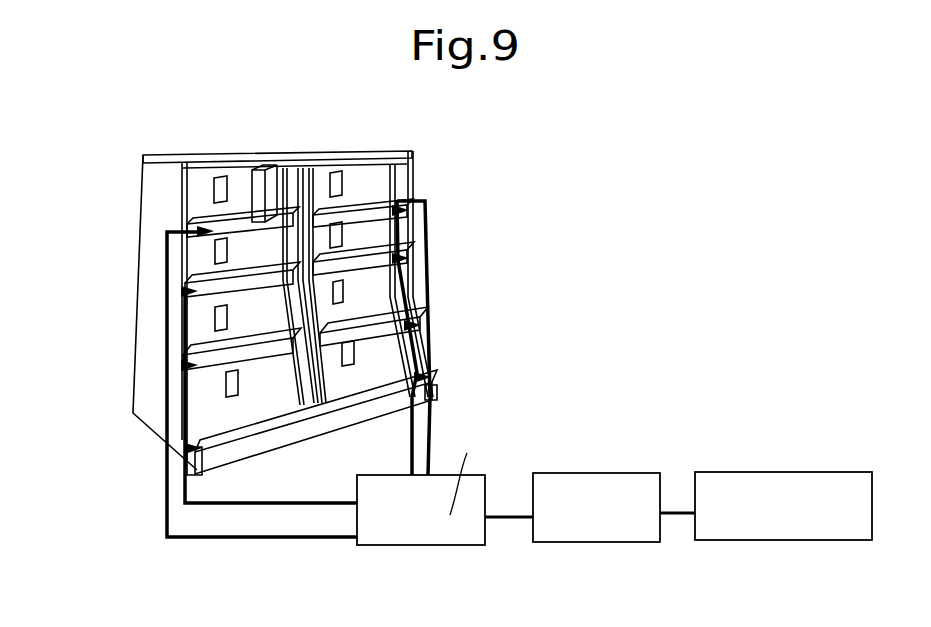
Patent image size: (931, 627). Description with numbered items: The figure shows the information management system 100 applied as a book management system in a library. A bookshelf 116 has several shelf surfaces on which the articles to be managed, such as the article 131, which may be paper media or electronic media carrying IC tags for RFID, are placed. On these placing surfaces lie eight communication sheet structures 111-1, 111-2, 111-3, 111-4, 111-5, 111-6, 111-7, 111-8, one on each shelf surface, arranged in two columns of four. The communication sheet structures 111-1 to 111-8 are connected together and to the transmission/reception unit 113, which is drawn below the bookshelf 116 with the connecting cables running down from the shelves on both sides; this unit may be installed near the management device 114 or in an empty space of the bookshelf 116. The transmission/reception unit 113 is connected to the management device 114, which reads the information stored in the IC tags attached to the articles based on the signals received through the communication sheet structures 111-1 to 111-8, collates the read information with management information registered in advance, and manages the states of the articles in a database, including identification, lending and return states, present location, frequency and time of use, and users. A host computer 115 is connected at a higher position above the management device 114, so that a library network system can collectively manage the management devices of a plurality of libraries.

The information management system 100 is at (717, 357).
The bookshelf 116 is at (167, 155).
The article to be managed 131 is at (273, 168).
The communication sheet structure 111-1 is at (212, 220).
The communication sheet structure 111-2 is at (222, 278).
The communication sheet structure 111-3 is at (222, 358).
The communication sheet structure 111-4 is at (232, 428).
The communication sheet structure 111-5 is at (368, 206).
The communication sheet structure 111-6 is at (368, 258).
The communication sheet structure 111-7 is at (373, 322).
The communication sheet structure 111-8 is at (383, 373).
The transmission/reception unit 113 is at (422, 547).
The management device 114 is at (597, 545).
The host computer 115 is at (782, 541).